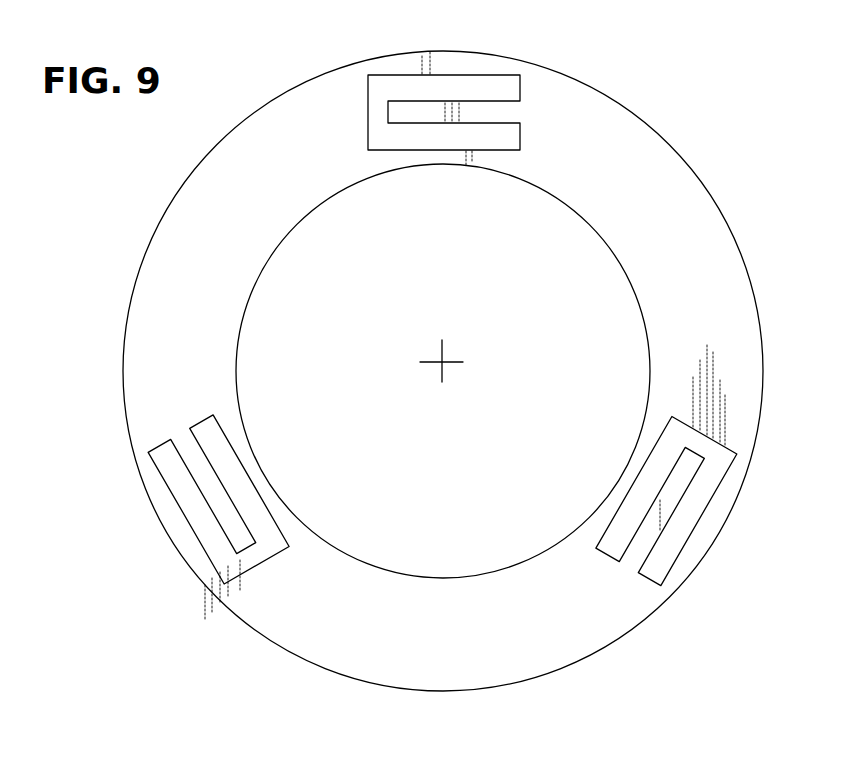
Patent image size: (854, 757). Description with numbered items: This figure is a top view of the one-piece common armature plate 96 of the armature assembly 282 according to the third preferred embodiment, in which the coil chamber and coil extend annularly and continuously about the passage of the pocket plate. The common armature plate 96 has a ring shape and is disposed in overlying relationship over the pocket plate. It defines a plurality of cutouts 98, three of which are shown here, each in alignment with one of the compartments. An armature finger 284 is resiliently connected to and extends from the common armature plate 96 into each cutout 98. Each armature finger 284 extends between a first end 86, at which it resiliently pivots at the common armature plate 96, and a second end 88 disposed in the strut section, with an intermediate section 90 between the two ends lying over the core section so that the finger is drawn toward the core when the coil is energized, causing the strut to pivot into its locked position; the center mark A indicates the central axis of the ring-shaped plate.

The first end 86 is at (520, 110).
The second end 88 is at (388, 113).
The intermediate section 90 is at (480, 112).
The cutouts 98 is at (425, 137).
The armature finger 284 is at (436, 112).
The common armature plate 96 is at (512, 658).
The armature assembly 282 is at (286, 661).
The central axis A is at (442, 362).